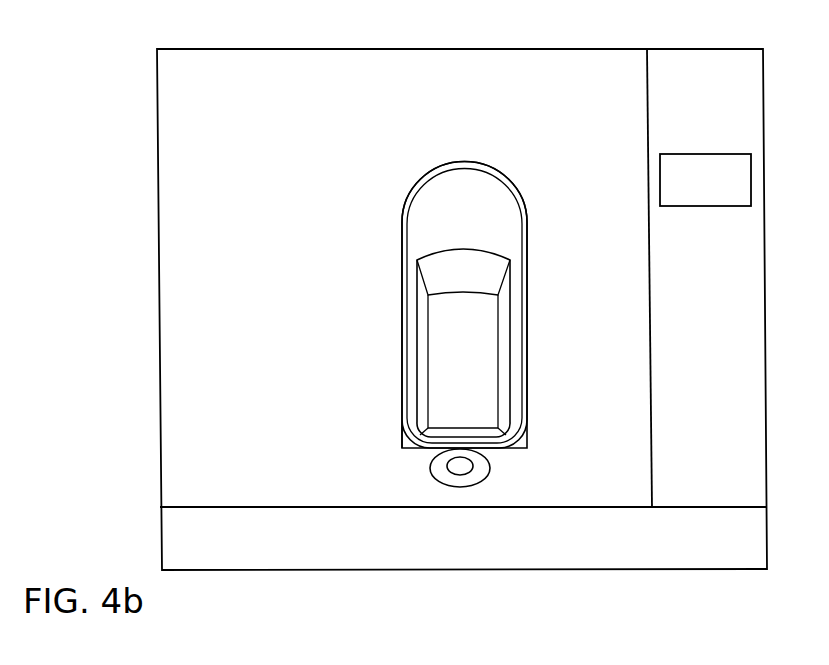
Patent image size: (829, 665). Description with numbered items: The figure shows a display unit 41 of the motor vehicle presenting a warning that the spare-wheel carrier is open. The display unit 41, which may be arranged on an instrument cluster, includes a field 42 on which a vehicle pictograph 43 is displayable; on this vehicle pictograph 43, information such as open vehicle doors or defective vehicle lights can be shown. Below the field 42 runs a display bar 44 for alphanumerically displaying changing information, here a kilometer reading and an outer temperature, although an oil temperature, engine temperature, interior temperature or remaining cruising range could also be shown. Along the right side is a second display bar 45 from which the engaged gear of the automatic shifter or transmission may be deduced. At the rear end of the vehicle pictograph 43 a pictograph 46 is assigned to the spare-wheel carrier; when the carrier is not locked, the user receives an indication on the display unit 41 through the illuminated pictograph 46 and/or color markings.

The display unit 41 is at (148, 46).
The field 42 is at (384, 79).
The vehicle pictograph 43 is at (478, 193).
The display bar 44 is at (175, 531).
The second display bar 45 is at (742, 105).
The pictograph 46 is at (480, 472).